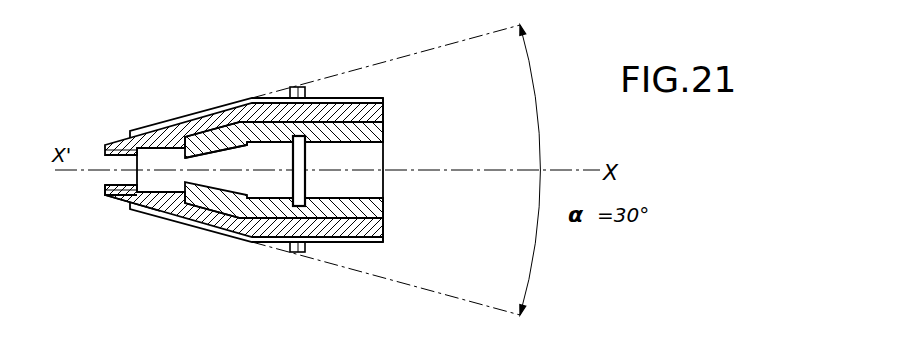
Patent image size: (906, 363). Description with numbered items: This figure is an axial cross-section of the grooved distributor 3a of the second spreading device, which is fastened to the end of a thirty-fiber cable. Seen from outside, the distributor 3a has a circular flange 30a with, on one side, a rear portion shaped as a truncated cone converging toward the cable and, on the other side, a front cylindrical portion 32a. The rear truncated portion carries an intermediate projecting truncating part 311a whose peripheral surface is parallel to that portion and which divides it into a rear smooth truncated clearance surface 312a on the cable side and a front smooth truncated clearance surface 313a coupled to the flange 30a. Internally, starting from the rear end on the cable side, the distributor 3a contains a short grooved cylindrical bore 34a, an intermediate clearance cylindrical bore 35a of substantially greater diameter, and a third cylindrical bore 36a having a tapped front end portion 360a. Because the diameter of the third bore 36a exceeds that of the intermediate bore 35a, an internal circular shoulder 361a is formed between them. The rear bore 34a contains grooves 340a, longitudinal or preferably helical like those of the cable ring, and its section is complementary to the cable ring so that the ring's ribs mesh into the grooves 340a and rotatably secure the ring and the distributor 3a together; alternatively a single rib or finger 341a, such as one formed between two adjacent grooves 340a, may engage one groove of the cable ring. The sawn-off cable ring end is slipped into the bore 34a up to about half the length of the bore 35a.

The distributor 3a is at (105, 85).
The circular flange 30a is at (296, 87).
The front cylindrical portion 32a is at (358, 223).
The grooved cylindrical bore 34a is at (114, 163).
The intermediate clearance cylindrical bore 35a is at (147, 148).
The third cylindrical bore 36a is at (262, 189).
The intermediate projecting truncating part 311a is at (155, 212).
The rear smooth truncated clearance surface 312a is at (104, 144).
The front smooth truncated clearance surface 313a is at (288, 243).
The longitudinal grooves 340a is at (101, 197).
The rib or finger 341a is at (113, 207).
The tapped front end portion 360a is at (359, 141).
The internal circular shoulder 361a is at (204, 148).